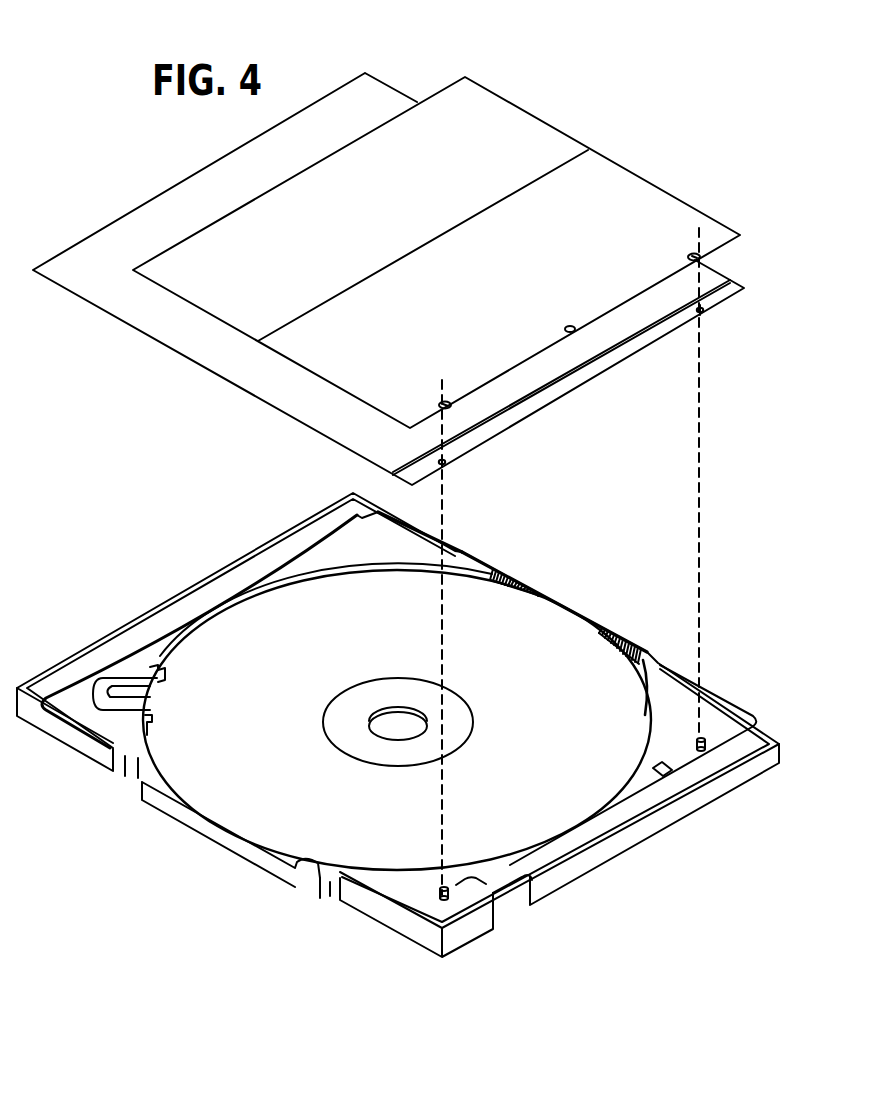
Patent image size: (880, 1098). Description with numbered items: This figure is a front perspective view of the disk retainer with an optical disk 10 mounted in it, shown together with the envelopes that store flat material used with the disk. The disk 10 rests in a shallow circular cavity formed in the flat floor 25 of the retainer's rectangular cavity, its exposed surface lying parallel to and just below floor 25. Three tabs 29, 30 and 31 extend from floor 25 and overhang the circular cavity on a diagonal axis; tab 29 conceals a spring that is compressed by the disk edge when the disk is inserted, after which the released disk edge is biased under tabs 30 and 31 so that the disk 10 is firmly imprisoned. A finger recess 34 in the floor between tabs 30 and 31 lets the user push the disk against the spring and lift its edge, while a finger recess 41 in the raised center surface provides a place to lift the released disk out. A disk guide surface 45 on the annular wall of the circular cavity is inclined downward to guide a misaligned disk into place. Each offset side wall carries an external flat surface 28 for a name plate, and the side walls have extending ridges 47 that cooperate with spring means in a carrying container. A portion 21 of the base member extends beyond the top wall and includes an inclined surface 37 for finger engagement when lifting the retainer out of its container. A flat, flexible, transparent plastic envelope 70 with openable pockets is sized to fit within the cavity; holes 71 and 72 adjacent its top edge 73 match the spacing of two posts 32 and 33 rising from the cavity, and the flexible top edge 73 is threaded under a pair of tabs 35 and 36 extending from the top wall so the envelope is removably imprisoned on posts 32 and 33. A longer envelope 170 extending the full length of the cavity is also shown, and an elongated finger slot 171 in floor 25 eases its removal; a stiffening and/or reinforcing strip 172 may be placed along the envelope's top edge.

The optical disk 10 is at (397, 714).
The portion of the base member 21 is at (398, 725).
The flat floor of rectangular cavity 25 is at (390, 553).
The external flat surface 28 is at (210, 829).
The tab 29 is at (650, 727).
The tab 30 is at (167, 670).
The tab 31 is at (153, 727).
The post 32 is at (698, 738).
The post 33 is at (438, 895).
The finger recess 34 is at (137, 698).
The tab 35 is at (474, 882).
The tab 36 is at (680, 758).
The inclined surface 37 is at (497, 926).
The finger recess 41 is at (397, 720).
The disk guide surface 45 is at (435, 575).
The extending ridge 47 is at (127, 771).
The envelope 70 is at (436, 252).
The hole 71 is at (688, 256).
The hole 72 is at (448, 402).
The top edge of envelope 73 is at (610, 318).
The longer envelope 170 is at (388, 279).
The elongated finger slot 171 is at (283, 559).
The stiffening and/or reinforcing strip 172 is at (510, 412).